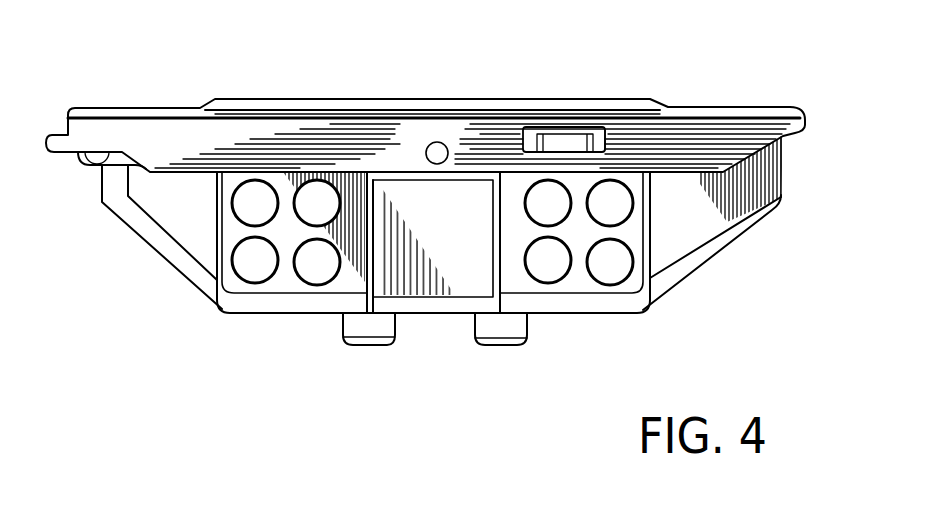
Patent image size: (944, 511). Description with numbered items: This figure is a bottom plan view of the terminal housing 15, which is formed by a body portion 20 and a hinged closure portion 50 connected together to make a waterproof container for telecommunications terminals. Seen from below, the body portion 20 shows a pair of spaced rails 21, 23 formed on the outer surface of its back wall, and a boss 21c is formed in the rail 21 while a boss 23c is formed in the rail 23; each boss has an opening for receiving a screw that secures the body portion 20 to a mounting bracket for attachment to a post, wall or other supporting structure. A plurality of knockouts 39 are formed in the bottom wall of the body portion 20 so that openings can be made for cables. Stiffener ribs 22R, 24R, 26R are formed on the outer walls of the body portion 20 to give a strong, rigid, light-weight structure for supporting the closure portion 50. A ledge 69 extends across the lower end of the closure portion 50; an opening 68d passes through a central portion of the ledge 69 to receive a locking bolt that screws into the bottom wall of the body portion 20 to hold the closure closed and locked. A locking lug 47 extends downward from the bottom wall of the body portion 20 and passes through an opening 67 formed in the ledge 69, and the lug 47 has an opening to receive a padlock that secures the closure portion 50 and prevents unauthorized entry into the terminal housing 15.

The terminal housing 15 is at (197, 293).
The body portion 20 is at (723, 252).
The rail 21 is at (368, 325).
The boss 21c is at (380, 345).
The stiffener rib 22R is at (583, 303).
The rail 23 is at (510, 325).
The boss 23c is at (497, 343).
The stiffener rib 24R is at (750, 212).
The stiffener rib 26R is at (145, 224).
The knockouts 39 is at (323, 263).
The locking lug 47 is at (557, 128).
The closure portion 50 is at (697, 98).
The opening 67 is at (607, 135).
The opening 68d is at (436, 152).
The ledge 69 is at (167, 143).